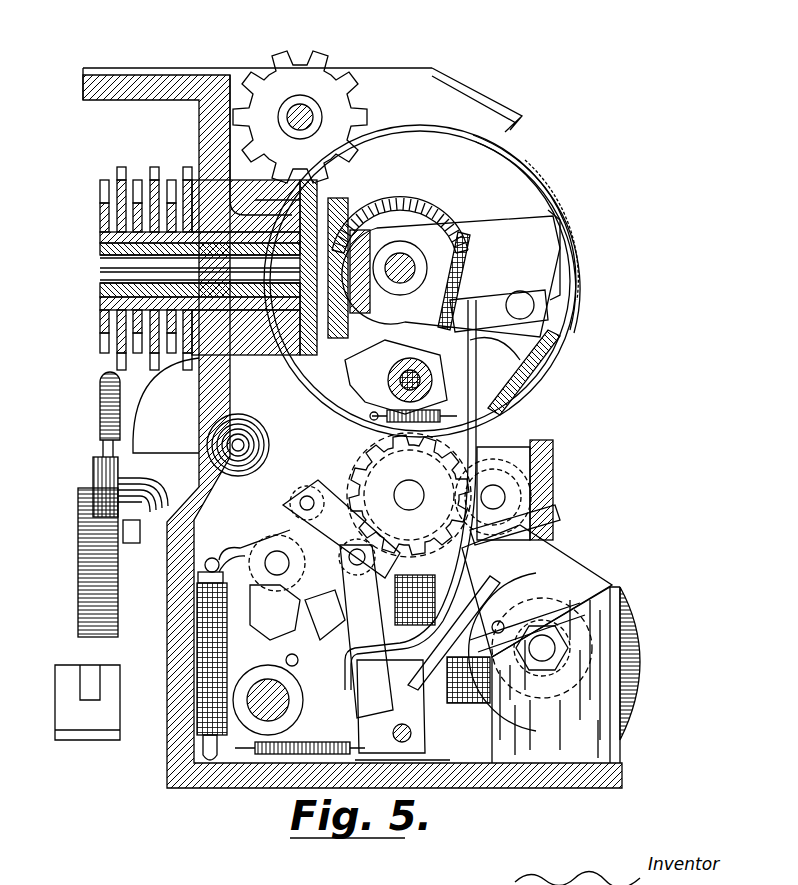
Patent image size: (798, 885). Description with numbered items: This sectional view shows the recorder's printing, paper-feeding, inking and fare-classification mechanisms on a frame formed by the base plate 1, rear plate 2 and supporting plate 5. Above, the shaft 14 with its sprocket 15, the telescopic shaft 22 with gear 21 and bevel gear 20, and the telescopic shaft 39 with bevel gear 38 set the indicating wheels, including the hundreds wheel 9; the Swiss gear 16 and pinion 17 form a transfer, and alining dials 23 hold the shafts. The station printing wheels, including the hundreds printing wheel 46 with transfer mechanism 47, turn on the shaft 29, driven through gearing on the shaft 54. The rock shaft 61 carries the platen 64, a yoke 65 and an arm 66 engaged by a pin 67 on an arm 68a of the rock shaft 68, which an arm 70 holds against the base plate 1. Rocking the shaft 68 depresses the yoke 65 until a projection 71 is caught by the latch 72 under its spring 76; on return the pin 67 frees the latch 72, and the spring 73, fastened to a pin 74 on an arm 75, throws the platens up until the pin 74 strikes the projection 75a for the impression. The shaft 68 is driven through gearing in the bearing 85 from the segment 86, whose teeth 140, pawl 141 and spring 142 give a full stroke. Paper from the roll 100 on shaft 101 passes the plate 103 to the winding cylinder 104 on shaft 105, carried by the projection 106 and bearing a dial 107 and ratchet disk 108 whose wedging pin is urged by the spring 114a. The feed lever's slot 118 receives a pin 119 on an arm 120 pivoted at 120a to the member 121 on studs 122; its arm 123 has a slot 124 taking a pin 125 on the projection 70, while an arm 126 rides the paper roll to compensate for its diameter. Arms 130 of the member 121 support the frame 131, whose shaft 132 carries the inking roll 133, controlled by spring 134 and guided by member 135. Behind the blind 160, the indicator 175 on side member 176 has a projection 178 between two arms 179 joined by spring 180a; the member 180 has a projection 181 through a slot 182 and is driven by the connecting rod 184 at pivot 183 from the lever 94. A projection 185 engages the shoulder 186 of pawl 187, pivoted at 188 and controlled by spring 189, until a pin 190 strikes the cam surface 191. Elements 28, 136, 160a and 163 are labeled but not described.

The base plate 1 is at (625, 777).
The rear plate 2 is at (213, 118).
The intermediate supporting plate 5 is at (345, 372).
The hundreds or dollar wheel 9 is at (416, 125).
The shaft 14 is at (100, 268).
The sprocket 15 is at (100, 190).
The Swiss gear 16 is at (332, 64).
The pinion 17 is at (370, 90).
The bevel gear 20 is at (337, 198).
The gear 21 is at (310, 212).
The telescopic shaft 22 is at (110, 247).
The dial 23 is at (155, 167).
The lever 28 is at (562, 505).
The shaft 29 is at (409, 480).
The bevel gear 38 is at (295, 195).
The telescopic shaft 39 is at (118, 300).
The hundreds printing wheel 46 is at (449, 498).
The transfer mechanism 47 is at (510, 497).
The shaft 54 is at (380, 392).
The rock shaft 61 is at (266, 556).
The platen 64 is at (454, 639).
The yoke 65 is at (330, 615).
The arm 66 is at (272, 612).
The pin 67 is at (290, 650).
The rock shaft 68 is at (213, 762).
The arm 68a is at (205, 665).
The arm 70 is at (270, 735).
The projection 71 is at (318, 512).
The latch 72 is at (298, 660).
The spring 73 is at (210, 690).
The pin 74 is at (205, 566).
The arm 75 is at (228, 552).
The projection 75a is at (205, 605).
The spring 76 is at (265, 762).
The bearing 85 is at (125, 754).
The segment 86 is at (70, 690).
The lever 94 is at (285, 695).
The paper roll 100 is at (199, 415).
The shaft 101 is at (232, 447).
The plate 103 is at (625, 700).
The winding cylinder 104 is at (605, 745).
The shaft 105 is at (548, 665).
The projection 106 is at (485, 770).
The dial 107 is at (642, 630).
The ratchet disk 108 is at (600, 582).
The spring 114a is at (565, 525).
The elongated slot 118 is at (529, 614).
The pin 119 is at (527, 627).
The arm 120 is at (462, 645).
The pivot 120a is at (391, 706).
The member 121 is at (412, 735).
The studs 122 is at (405, 750).
The arm 123 is at (400, 760).
The slot 124 is at (330, 760).
The pin 125 is at (300, 755).
The arm 126 is at (570, 565).
The arms 130 is at (387, 631).
The pivotal frame 131 is at (411, 518).
The shaft 132 is at (307, 490).
The inking roll 133 is at (200, 495).
The spring 134 is at (358, 566).
The member 135 is at (394, 495).
The bevel gear 136 is at (360, 228).
The teeth 140 is at (95, 545).
The pawl 141 is at (93, 475).
The spring 142 is at (98, 400).
The blind 160 is at (535, 122).
The guide plate 160a is at (470, 72).
The stop 163 is at (660, 300).
The oscillating indicator 175 is at (548, 350).
The side member 176 is at (455, 228).
The projection 178 is at (575, 268).
The arms 179 is at (472, 240).
The member 180 is at (545, 175).
The spring 180a is at (402, 240).
The projection 181 is at (568, 292).
The slot 182 is at (577, 218).
The pivot 183 is at (540, 200).
The connecting rod 184 is at (556, 468).
The projection 185 is at (545, 400).
The shoulder 186 is at (578, 327).
The pawl 187 is at (560, 430).
The pivot 188 is at (590, 445).
The spring 189 is at (372, 416).
The pin 190 is at (555, 240).
The cam surface 191 is at (558, 205).